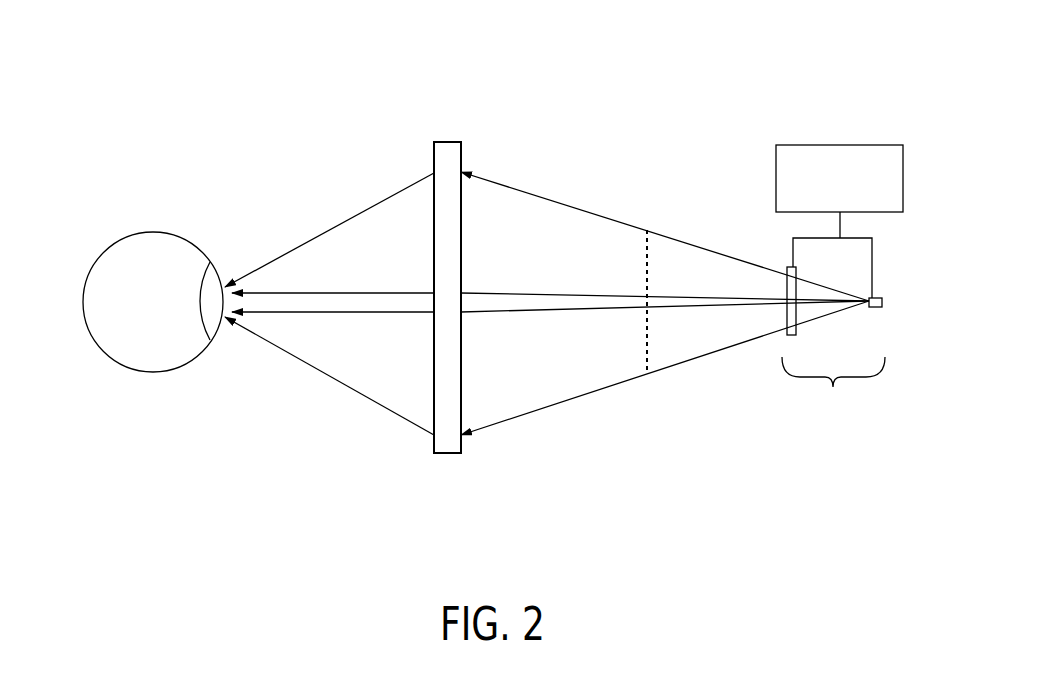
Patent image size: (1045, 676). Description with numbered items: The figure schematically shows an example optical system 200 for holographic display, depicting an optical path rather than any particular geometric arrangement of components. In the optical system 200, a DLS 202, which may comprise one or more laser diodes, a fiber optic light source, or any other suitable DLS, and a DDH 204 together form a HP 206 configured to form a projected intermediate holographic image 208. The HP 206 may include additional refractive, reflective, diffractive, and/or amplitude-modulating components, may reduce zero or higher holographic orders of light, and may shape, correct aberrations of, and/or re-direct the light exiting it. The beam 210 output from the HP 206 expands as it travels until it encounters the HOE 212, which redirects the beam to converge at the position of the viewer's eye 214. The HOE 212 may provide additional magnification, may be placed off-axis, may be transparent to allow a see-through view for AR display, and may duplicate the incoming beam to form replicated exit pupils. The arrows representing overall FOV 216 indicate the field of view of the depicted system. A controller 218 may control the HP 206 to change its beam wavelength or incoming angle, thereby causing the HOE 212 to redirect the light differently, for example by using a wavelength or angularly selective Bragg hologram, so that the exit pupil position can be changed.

The optical system 200 is at (790, 93).
The DLS 202 is at (875, 297).
The DDH 204 is at (797, 317).
The HP 206 is at (833, 386).
The projected intermediate holographic image 208 is at (647, 312).
The beam 210 is at (537, 282).
The HOE 212 is at (462, 347).
The viewer's eye 214 is at (83, 308).
The arrows representing overall FOV 216 is at (343, 192).
The controller 218 is at (839, 221).